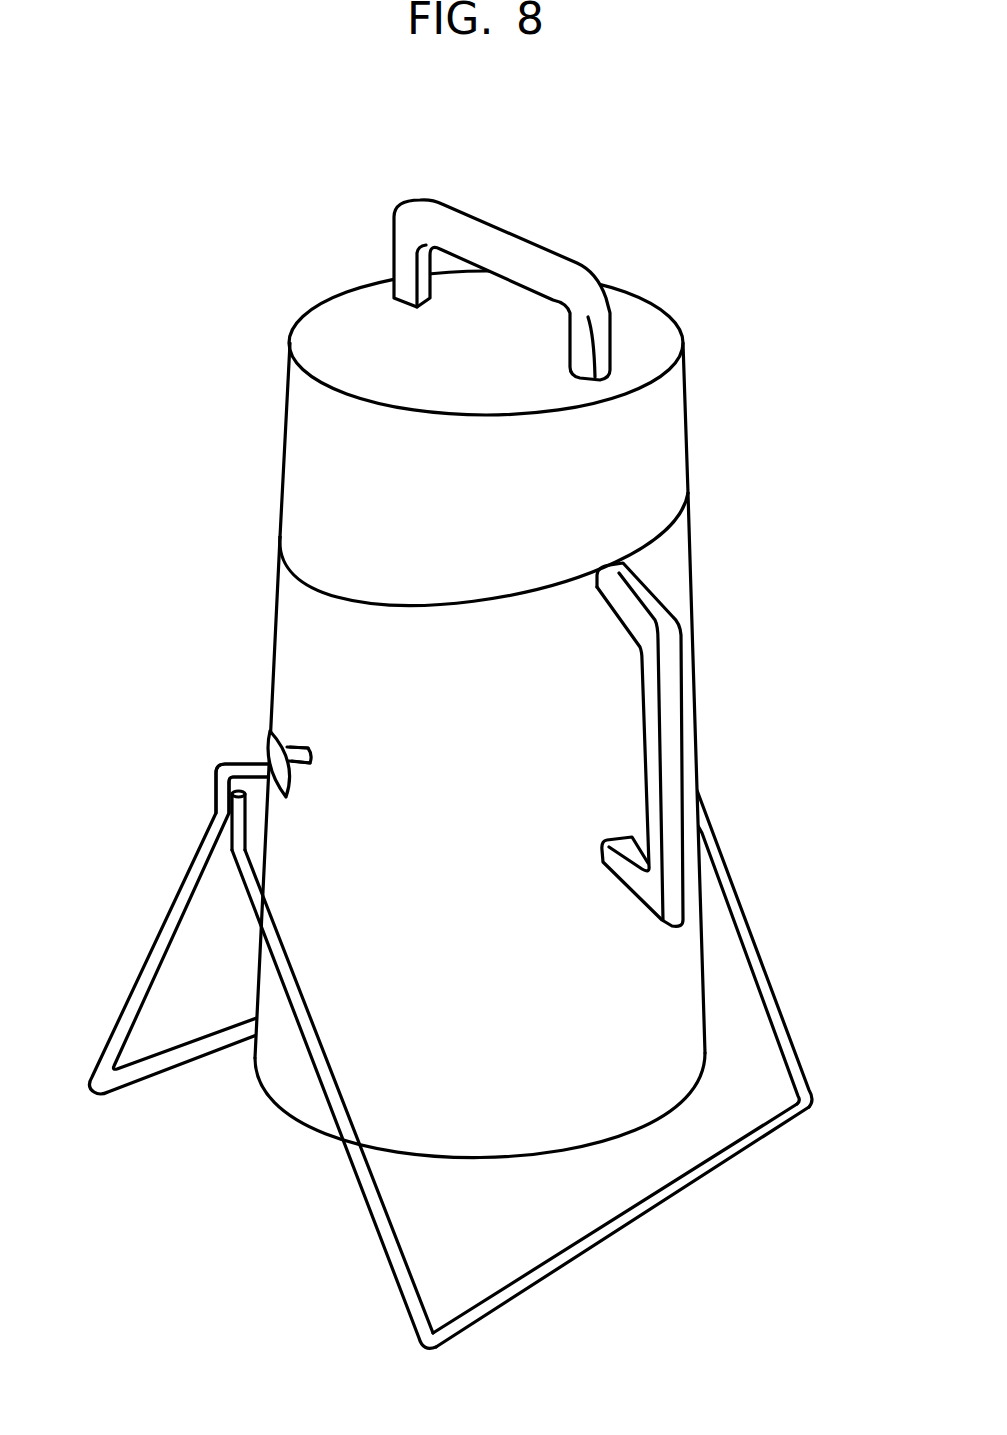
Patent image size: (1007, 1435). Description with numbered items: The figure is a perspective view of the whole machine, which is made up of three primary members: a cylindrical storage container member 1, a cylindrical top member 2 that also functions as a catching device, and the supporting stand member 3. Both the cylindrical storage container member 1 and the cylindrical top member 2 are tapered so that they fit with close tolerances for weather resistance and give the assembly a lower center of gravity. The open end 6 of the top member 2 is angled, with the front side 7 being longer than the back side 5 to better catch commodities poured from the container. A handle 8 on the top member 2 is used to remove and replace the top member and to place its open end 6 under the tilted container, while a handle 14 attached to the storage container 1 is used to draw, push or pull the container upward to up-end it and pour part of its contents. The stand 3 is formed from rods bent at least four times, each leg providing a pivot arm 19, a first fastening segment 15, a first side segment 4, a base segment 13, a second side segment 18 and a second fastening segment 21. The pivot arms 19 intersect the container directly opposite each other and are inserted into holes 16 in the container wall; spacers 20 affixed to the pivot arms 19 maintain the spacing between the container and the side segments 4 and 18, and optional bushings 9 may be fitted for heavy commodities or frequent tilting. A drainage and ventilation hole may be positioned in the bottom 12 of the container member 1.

The cylindrical storage container member 1 is at (518, 1041).
The cylindrical top member 2 is at (553, 442).
The stand member 3 is at (733, 877).
The first side segment 4 is at (162, 930).
The back side 5 is at (660, 463).
The open end 6 is at (333, 563).
The front side 7 is at (288, 373).
The handle 8 is at (400, 203).
The bushings 9 is at (312, 753).
The bottom 12 is at (542, 1155).
The base segment 13 is at (188, 1062).
The handle 14 is at (680, 770).
The first fastening segment 15 is at (215, 782).
The holes 16 is at (307, 747).
The second side segment 18 is at (362, 1197).
The pivot arm 19 is at (307, 767).
The spacers 20 is at (265, 735).
The second fastening segment 21 is at (243, 808).